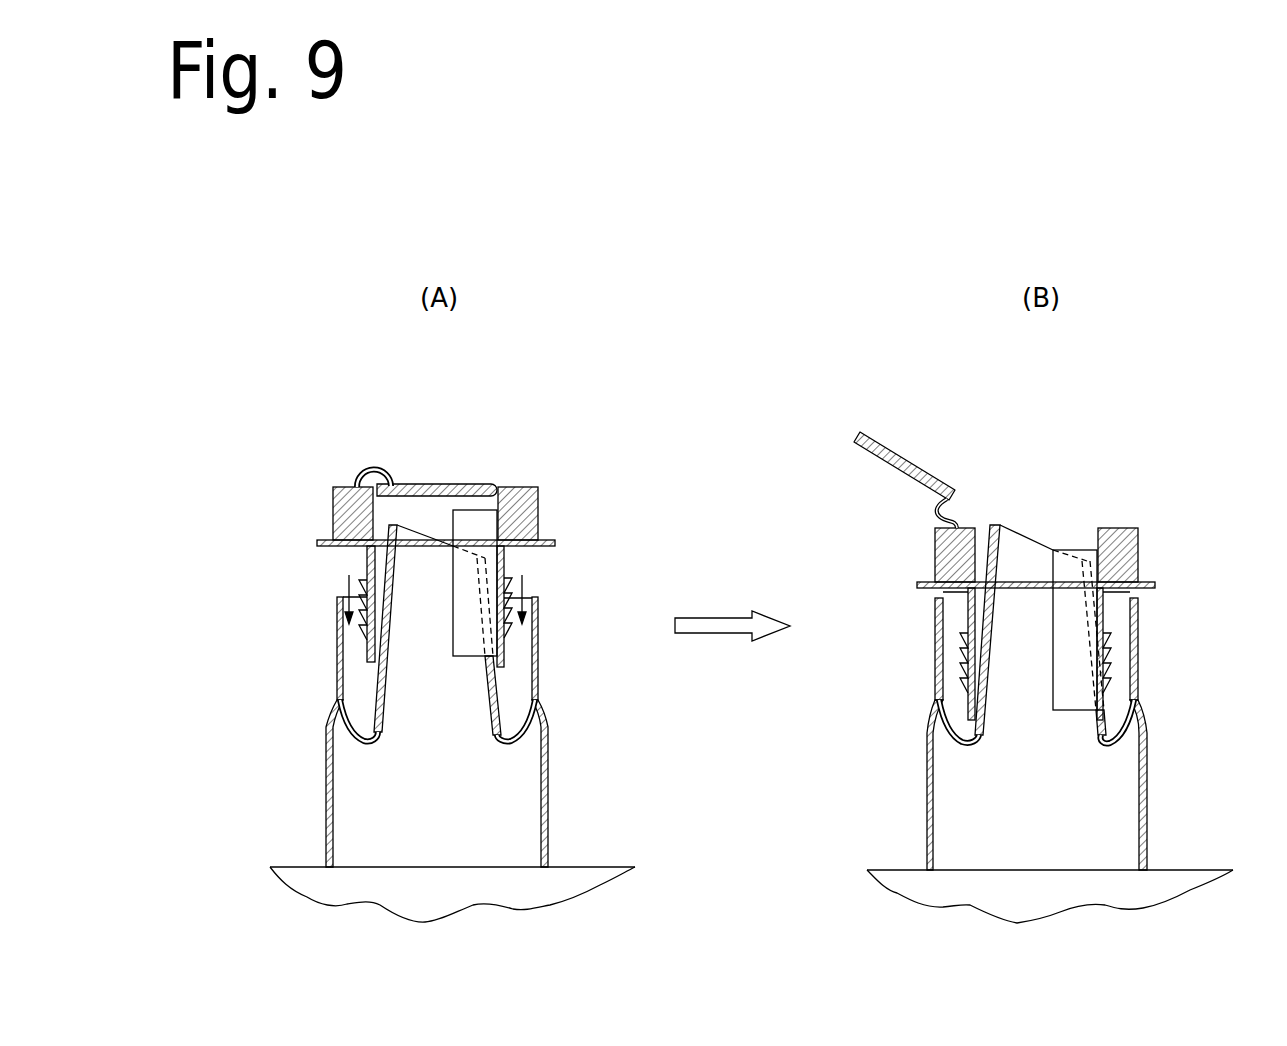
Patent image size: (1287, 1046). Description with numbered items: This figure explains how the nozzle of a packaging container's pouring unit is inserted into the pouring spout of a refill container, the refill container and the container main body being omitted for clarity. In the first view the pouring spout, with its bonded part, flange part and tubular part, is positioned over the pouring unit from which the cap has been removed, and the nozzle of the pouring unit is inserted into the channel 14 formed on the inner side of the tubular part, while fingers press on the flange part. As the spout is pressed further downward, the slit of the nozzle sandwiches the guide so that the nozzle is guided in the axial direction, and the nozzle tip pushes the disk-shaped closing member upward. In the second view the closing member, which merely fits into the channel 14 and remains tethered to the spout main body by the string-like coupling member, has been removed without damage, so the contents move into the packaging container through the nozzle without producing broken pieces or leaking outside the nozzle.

The channel 14 is at (377, 515).